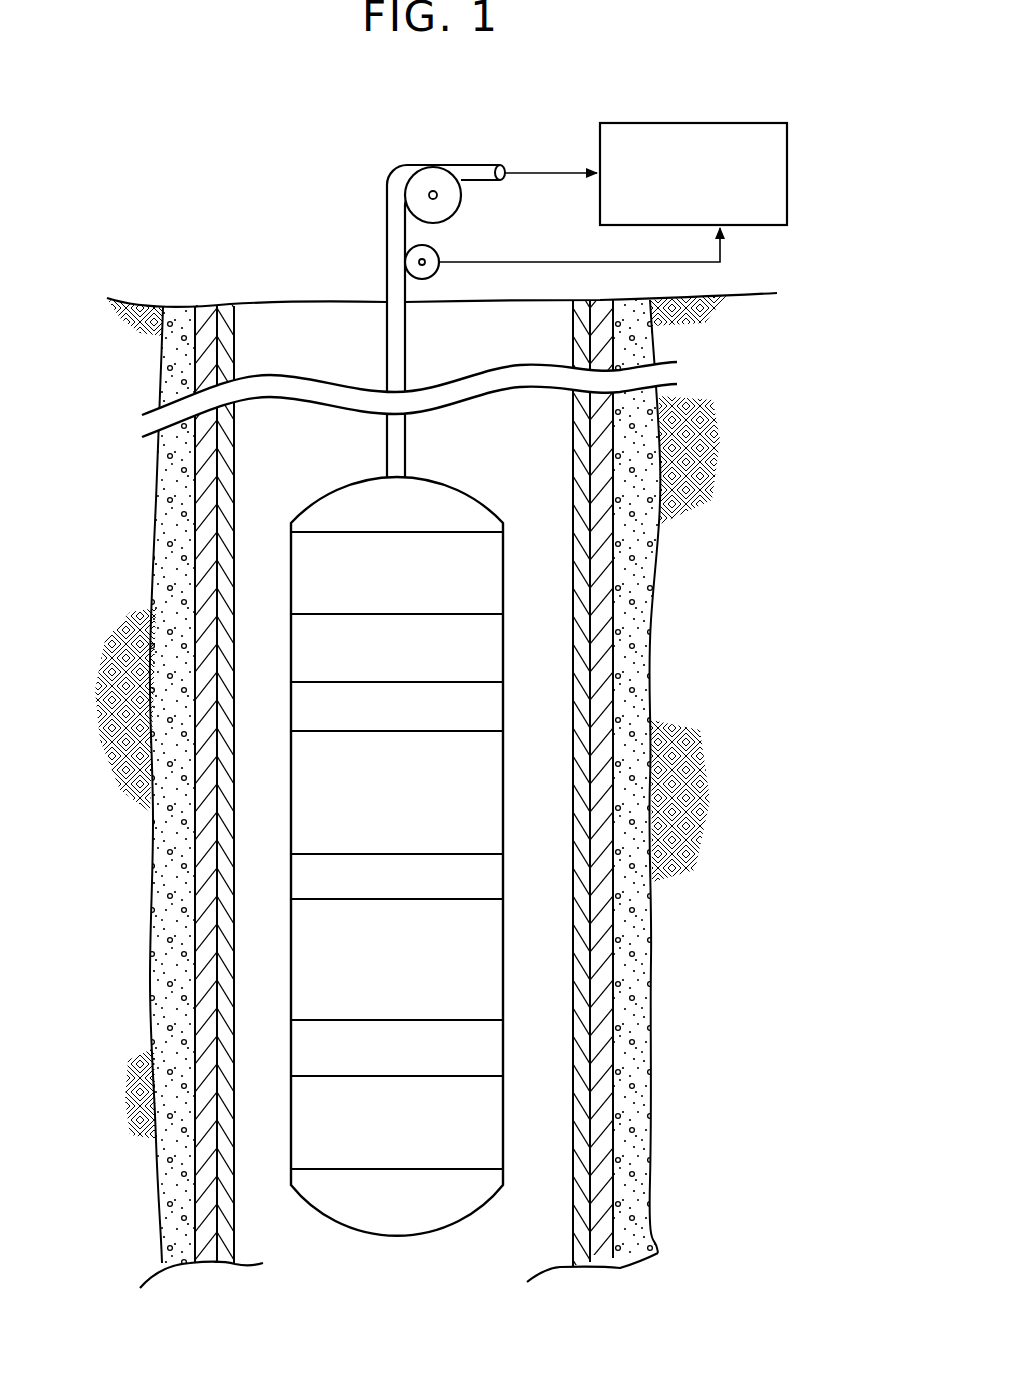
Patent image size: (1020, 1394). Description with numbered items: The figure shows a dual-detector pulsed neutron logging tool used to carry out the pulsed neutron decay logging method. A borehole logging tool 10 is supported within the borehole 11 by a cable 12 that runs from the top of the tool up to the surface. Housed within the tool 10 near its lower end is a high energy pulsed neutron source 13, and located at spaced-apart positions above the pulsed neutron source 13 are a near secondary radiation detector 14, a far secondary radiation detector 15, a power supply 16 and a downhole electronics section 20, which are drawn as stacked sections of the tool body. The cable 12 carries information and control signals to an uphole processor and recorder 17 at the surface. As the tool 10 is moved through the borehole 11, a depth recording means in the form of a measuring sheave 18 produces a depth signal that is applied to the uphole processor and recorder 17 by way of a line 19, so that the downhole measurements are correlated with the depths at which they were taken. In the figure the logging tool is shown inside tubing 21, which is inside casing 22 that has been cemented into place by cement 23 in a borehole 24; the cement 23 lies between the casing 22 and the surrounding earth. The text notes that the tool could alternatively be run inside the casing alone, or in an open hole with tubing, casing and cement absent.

The borehole logging tool 10 is at (422, 837).
The borehole 11 is at (270, 443).
The cable 12 is at (405, 345).
The pulsed neutron source 13 is at (488, 1117).
The near secondary radiation detector 14 is at (488, 935).
The far secondary radiation detector 15 is at (488, 793).
The power supply 16 is at (488, 577).
The uphole processor and recorder 17 is at (753, 123).
The measuring sheave 18 is at (437, 247).
The line 19 is at (532, 262).
The downhole electronics section 20 is at (488, 660).
The tubing 21 is at (237, 1229).
The casing 22 is at (203, 1255).
The cement 23 is at (178, 1215).
The borehole 24 is at (149, 965).